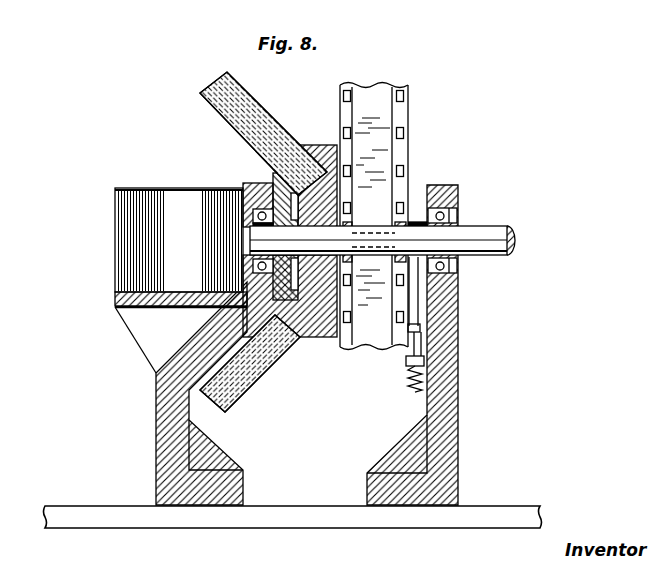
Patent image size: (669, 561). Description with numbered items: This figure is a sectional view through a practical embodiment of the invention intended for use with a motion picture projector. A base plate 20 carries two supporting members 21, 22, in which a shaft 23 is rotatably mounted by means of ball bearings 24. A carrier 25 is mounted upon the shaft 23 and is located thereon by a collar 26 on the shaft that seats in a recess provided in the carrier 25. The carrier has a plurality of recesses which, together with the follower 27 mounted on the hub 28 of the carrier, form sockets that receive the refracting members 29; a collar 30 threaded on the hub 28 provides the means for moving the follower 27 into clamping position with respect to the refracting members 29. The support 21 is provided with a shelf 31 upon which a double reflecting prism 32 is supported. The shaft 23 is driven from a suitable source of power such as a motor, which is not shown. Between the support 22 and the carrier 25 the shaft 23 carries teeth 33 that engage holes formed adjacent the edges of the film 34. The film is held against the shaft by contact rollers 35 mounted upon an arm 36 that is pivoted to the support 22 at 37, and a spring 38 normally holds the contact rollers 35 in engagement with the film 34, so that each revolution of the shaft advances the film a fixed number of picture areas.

The base plate 20 is at (150, 516).
The supporting member 21 is at (168, 428).
The supporting member 22 is at (445, 430).
The shaft 23 is at (492, 247).
The ball bearings 24 is at (260, 212).
The carrier 25 is at (322, 145).
The collar 26 is at (325, 337).
The follower 27 is at (278, 188).
The hub 28 is at (293, 193).
The refracting members 29 is at (213, 86).
The collar 30 is at (281, 368).
The shelf 31 is at (126, 318).
The double reflecting prism 32 is at (125, 240).
The teeth 33 is at (403, 237).
The film 34 is at (348, 118).
The contact rollers 35 is at (372, 240).
The arm 36 is at (418, 310).
The pivot 37 is at (407, 357).
The spring 38 is at (413, 373).